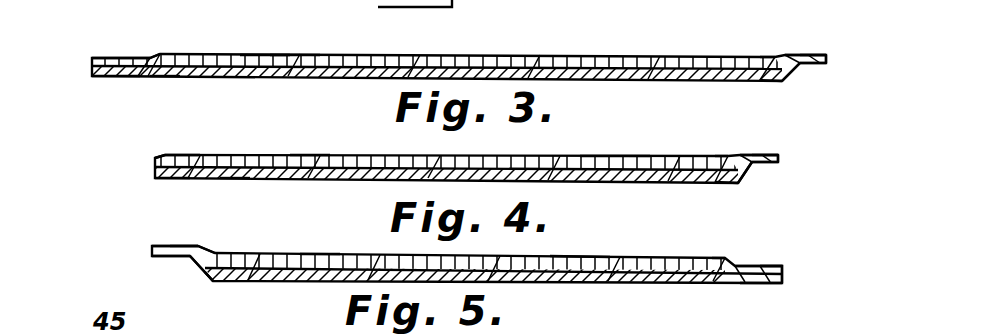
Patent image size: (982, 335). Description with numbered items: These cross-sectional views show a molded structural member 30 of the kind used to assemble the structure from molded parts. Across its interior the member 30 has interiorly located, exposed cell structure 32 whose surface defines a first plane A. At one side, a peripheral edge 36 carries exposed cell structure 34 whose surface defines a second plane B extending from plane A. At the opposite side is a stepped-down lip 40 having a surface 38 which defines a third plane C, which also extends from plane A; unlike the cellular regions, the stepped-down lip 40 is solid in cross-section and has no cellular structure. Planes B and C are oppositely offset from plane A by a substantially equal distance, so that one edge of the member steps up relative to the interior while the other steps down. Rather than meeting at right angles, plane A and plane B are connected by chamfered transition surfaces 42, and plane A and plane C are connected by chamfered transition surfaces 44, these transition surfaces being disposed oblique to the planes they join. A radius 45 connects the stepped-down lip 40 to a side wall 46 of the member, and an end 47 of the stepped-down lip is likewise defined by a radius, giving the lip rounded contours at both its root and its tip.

In FIG. 3, the molded structural member 30 is at (80, 36).
In FIG. 4, the molded structural member 30 is at (140, 156).
In FIG. 5, the molded structural member 30 is at (135, 245).
In FIG. 3, the exposed cell structure 32 is at (292, 53).
In FIG. 4, the exposed cell structure 32 is at (640, 158).
In FIG. 5, the exposed cell structure 32 is at (599, 258).
In FIG. 3, the exposed cell structure 34 is at (128, 52).
In FIG. 4, the exposed cell structure 34 is at (189, 153).
In FIG. 5, the exposed cell structure 34 is at (750, 264).
In FIG. 3, the peripheral edge 36 is at (110, 76).
In FIG. 4, the peripheral edge 36 is at (158, 178).
In FIG. 5, the peripheral edge 36 is at (762, 284).
In FIG. 3, the surface 38 is at (790, 52).
In FIG. 4, the surface 38 is at (750, 153).
In FIG. 5, the surface 38 is at (188, 250).
In FIG. 3, the stepped-down lip 40 is at (802, 63).
In FIG. 4, the stepped-down lip 40 is at (756, 163).
In FIG. 5, the stepped-down lip 40 is at (160, 256).
In FIG. 3, the chamfered transition surfaces 42 is at (165, 72).
In FIG. 4, the chamfered transition surfaces 42 is at (235, 178).
In FIG. 5, the chamfered transition surfaces 42 is at (727, 262).
In FIG. 3, the chamfered transition surfaces 44 is at (770, 55).
In FIG. 4, the chamfered transition surfaces 44 is at (722, 156).
In FIG. 5, the chamfered transition surfaces 44 is at (215, 253).
In FIG. 3, the radius 45 is at (791, 72).
In FIG. 4, the radius 45 is at (745, 170).
In FIG. 5, the radius 45 is at (193, 266).
In FIG. 3, the side wall 46 is at (778, 80).
In FIG. 4, the side wall 46 is at (736, 184).
In FIG. 5, the side wall 46 is at (202, 278).
In FIG. 3, the end 47 is at (828, 58).
In FIG. 4, the end 47 is at (782, 158).
In FIG. 3, the first plane A is at (262, 52).
In FIG. 4, the first plane A is at (310, 153).
In FIG. 5, the first plane A is at (320, 252).
In FIG. 3, the second plane B is at (113, 52).
In FIG. 4, the second plane B is at (160, 158).
In FIG. 5, the second plane B is at (778, 266).
In FIG. 3, the third plane C is at (818, 53).
In FIG. 4, the third plane C is at (770, 155).
In FIG. 5, the third plane C is at (162, 246).